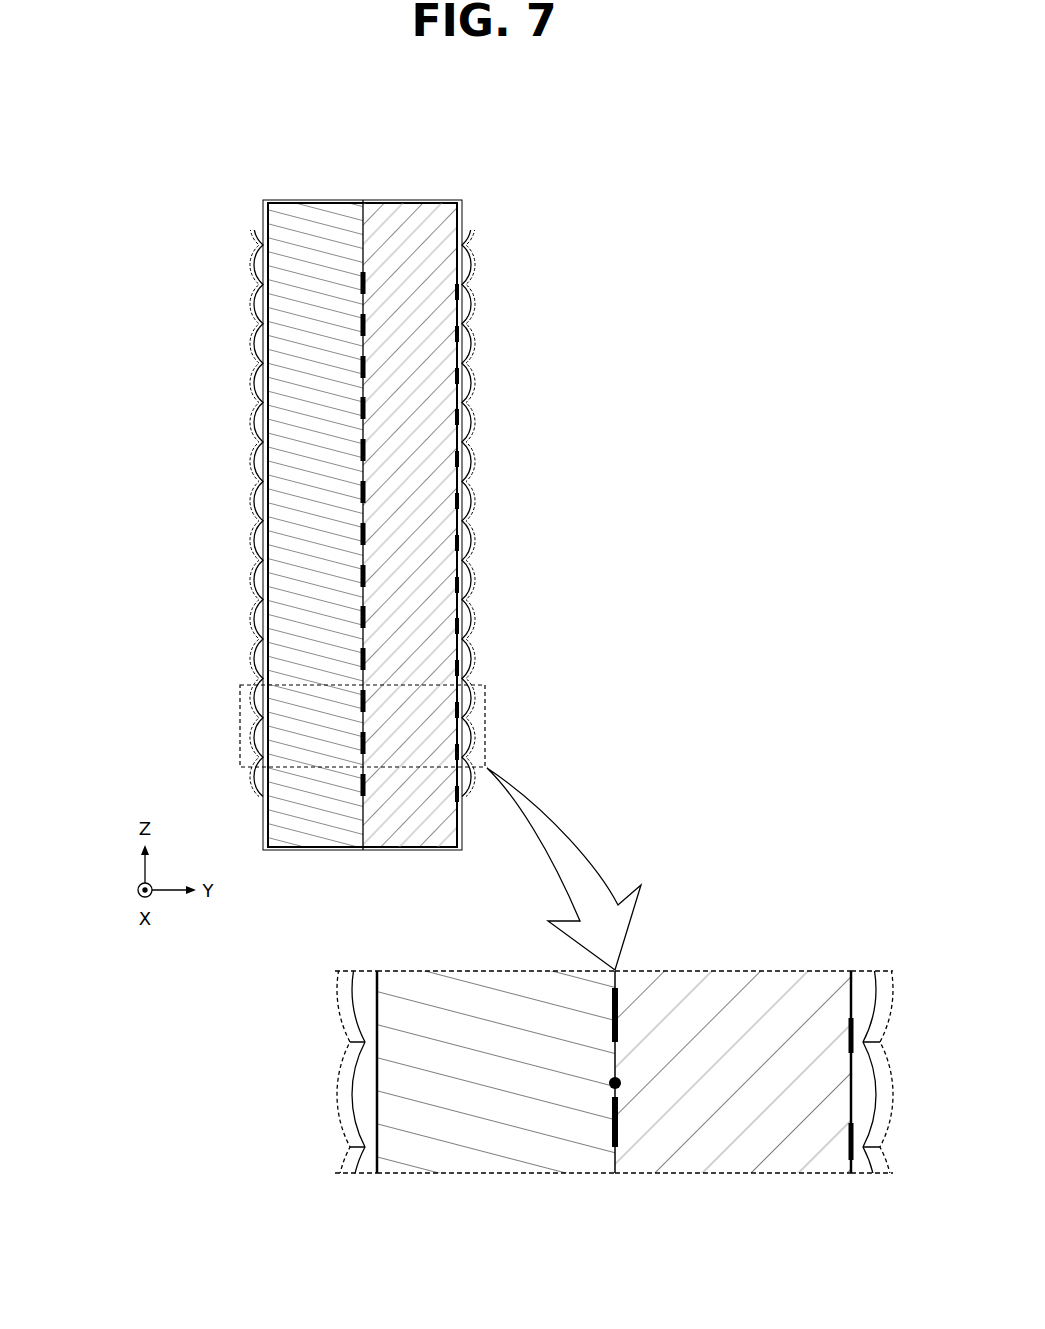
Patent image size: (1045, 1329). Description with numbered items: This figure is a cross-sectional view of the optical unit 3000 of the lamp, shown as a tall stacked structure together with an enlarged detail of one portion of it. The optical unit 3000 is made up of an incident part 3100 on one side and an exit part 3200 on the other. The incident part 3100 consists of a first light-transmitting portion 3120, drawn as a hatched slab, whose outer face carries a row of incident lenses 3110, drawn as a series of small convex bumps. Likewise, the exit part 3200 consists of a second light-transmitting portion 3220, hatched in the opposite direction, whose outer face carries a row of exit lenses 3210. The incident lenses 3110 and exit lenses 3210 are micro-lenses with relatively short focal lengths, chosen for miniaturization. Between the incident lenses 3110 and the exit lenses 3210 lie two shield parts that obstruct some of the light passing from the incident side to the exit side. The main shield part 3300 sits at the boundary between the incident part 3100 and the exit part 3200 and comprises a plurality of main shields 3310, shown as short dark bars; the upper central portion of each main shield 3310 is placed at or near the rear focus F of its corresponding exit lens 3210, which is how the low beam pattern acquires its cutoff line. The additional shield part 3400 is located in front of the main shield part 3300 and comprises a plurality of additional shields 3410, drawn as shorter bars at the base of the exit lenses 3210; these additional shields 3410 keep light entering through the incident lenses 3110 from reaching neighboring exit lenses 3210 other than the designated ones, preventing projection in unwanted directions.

The optical unit 3000 is at (388, 108).
The incident part 3100 is at (152, 203).
The incident lenses 3110 is at (263, 317).
The first light-transmitting portion 3120 is at (299, 208).
The exit part 3200 is at (576, 206).
The exit lenses 3210 is at (466, 317).
The second light-transmitting portion 3220 is at (429, 208).
The main shield part 3300 is at (347, 327).
The main shields 3310 is at (366, 315).
The additional shield part 3400 is at (445, 417).
The additional shields 3410 is at (458, 400).
The rear focus F is at (613, 1087).